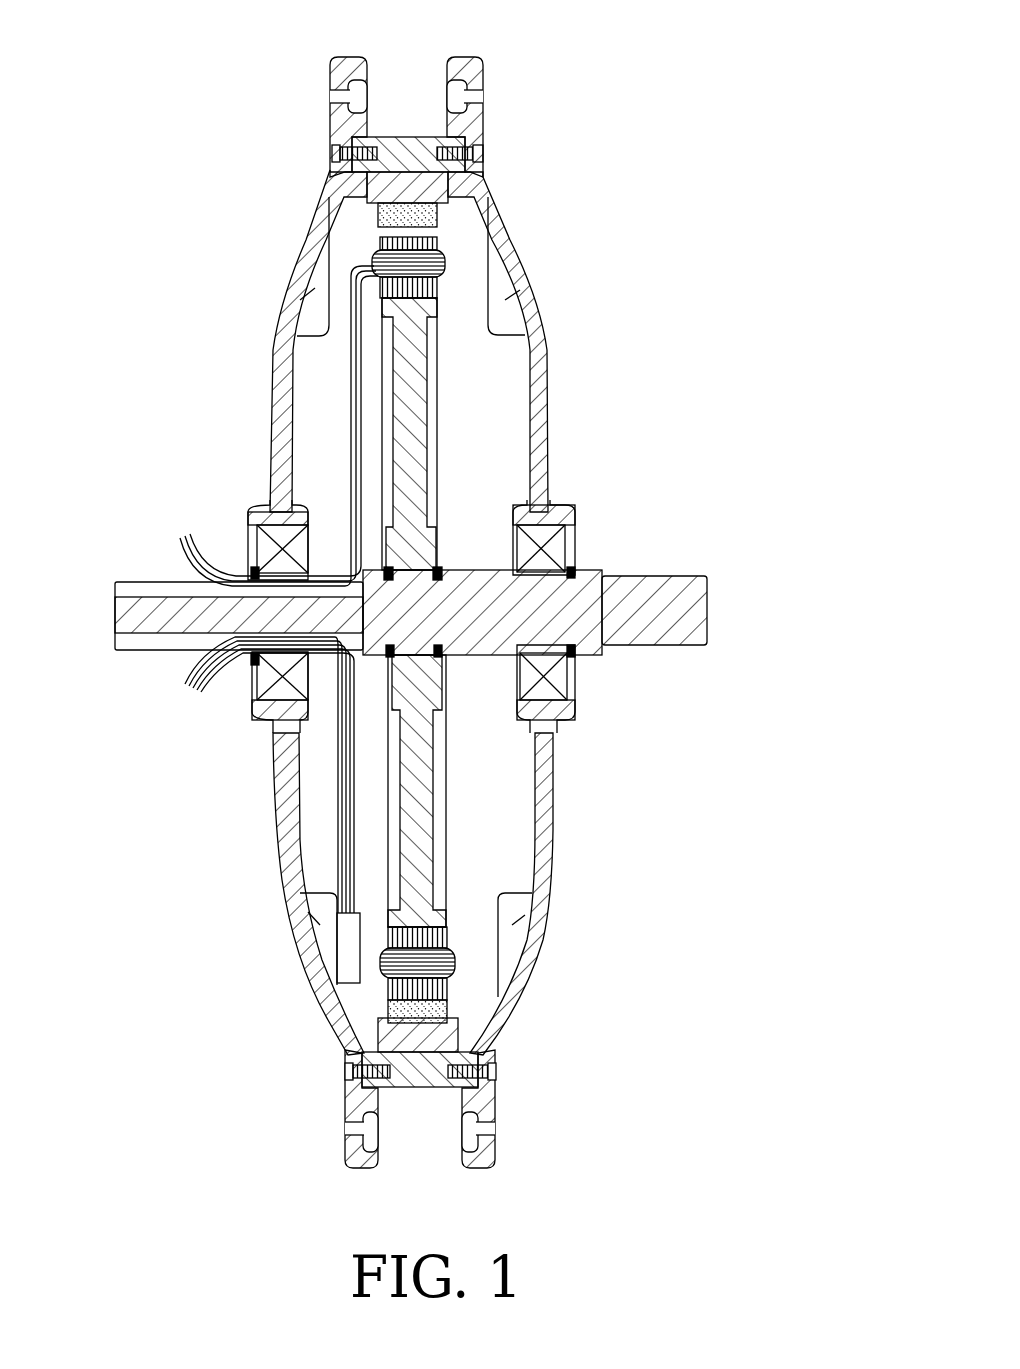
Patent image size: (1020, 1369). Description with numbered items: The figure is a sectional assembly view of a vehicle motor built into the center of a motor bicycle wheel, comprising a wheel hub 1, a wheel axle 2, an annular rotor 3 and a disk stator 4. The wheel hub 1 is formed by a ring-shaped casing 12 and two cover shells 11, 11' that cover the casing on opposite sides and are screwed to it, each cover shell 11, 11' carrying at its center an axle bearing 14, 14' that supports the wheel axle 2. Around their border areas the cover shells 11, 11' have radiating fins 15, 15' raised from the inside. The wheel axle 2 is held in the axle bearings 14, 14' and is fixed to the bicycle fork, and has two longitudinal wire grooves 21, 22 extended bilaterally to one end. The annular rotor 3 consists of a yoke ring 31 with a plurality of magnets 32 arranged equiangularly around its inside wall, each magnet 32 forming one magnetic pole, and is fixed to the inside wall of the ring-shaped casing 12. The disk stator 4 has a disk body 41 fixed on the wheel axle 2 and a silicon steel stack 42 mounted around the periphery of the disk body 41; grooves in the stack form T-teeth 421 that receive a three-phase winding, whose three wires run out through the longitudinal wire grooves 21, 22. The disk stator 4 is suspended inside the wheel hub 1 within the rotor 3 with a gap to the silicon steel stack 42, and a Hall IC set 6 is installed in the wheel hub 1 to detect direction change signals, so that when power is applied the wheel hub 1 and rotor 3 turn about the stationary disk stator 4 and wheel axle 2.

The wheel hub 1 is at (326, 83).
The wheel axle 2 is at (668, 622).
The annular rotor 3 is at (520, 216).
The disk stator 4 is at (445, 815).
The Hall IC set 6 is at (348, 958).
The cover shell 11 is at (552, 221).
The cover shell 11' is at (278, 255).
The ring-shaped casing 12 is at (407, 140).
The axle bearing 14 is at (586, 604).
The axle bearing 14' is at (252, 586).
The radiating fin 15 is at (563, 600).
The radiating fin 15' is at (264, 597).
The longitudinal wire groove 21 is at (150, 590).
The longitudinal wire groove 22 is at (172, 656).
The yoke ring 31 is at (440, 195).
The magnet 32 is at (395, 210).
The disk body 41 is at (420, 730).
The silicon steel stack 42 is at (440, 940).
The T-teeth 421 is at (365, 1030).